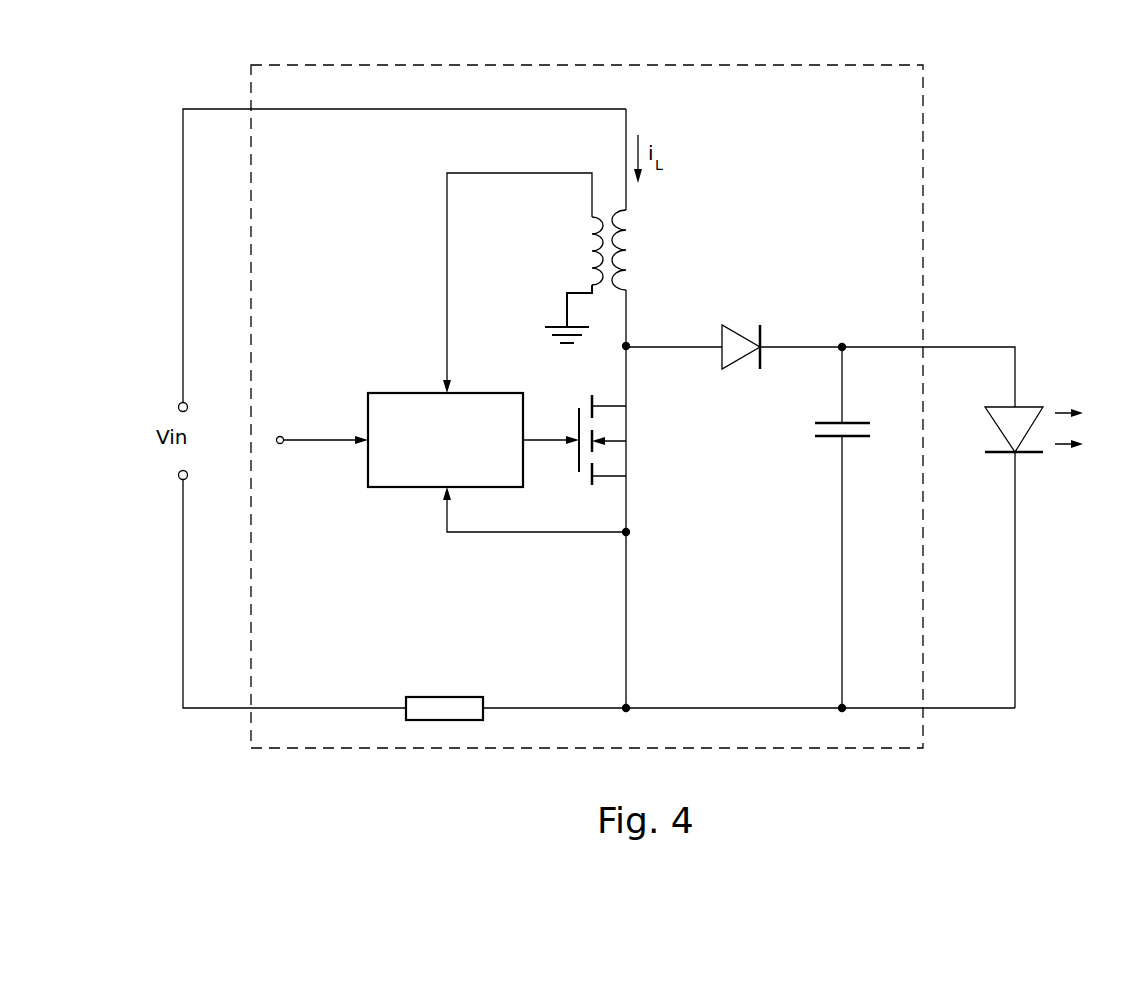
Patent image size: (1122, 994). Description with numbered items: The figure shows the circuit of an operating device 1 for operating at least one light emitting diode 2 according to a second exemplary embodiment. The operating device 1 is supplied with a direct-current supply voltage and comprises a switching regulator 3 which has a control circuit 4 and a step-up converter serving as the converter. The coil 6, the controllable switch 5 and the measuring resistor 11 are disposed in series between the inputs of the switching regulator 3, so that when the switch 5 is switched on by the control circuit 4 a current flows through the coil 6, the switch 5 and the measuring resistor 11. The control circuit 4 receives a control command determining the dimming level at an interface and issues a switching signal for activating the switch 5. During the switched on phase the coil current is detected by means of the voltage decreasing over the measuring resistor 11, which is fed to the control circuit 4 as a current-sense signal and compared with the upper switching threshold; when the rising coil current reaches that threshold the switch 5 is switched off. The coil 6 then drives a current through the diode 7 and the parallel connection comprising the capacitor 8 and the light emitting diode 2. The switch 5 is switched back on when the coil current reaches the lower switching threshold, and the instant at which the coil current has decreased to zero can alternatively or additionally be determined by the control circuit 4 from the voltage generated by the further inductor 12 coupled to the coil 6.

The operating device 1 is at (1021, 730).
The light emitting diode 2 is at (1046, 390).
The switching regulator 3 is at (923, 135).
The control circuit 4 is at (398, 393).
The controllable switch 5 is at (657, 446).
The coil 6 is at (655, 248).
The diode 7 is at (745, 325).
The capacitor 8 is at (826, 437).
The measuring resistor 11 is at (447, 697).
The further inductor 12 is at (590, 250).